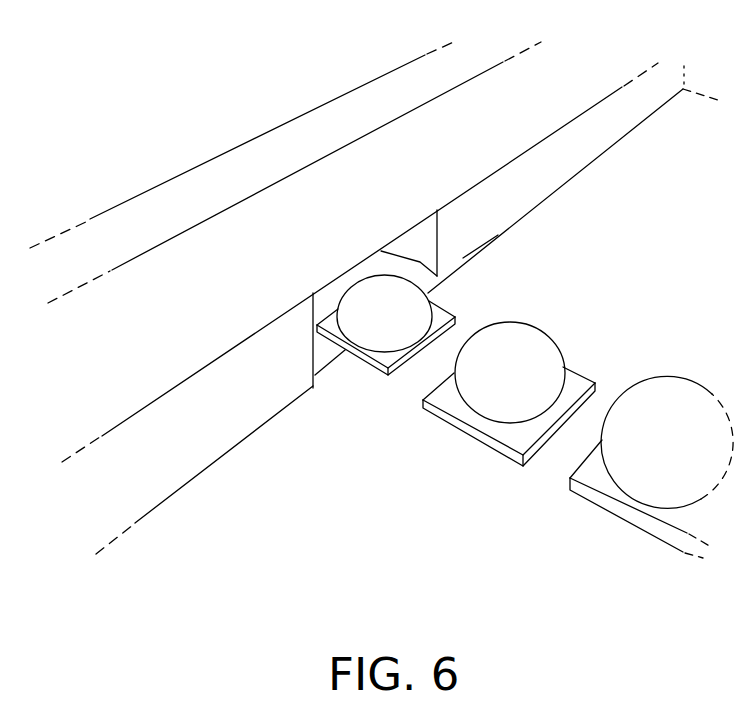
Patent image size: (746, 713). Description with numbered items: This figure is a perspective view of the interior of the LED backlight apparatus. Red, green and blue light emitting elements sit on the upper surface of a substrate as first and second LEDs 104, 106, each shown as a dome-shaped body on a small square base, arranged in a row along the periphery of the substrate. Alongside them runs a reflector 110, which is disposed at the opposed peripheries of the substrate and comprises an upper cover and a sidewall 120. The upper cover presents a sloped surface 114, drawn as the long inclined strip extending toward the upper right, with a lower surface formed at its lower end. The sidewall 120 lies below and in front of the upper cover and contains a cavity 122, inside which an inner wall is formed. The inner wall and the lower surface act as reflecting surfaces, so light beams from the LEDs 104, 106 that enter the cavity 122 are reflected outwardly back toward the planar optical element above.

The reflector 110 is at (185, 148).
The sloped surface 114 is at (372, 150).
The sidewall 120 is at (243, 410).
The cavity 122 is at (372, 267).
The first LED 104 is at (404, 284).
The second LED 106 is at (533, 337).